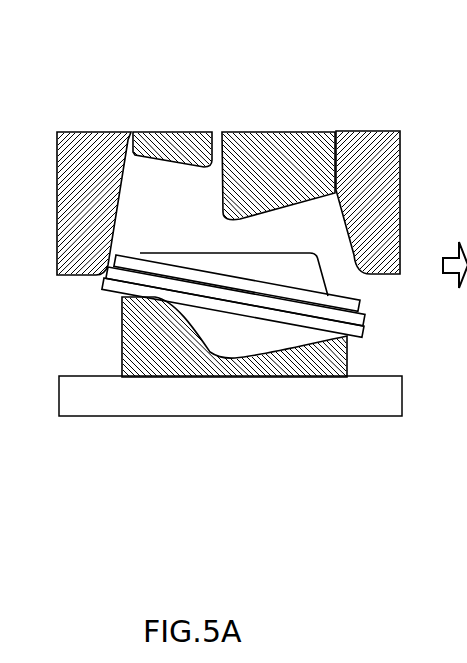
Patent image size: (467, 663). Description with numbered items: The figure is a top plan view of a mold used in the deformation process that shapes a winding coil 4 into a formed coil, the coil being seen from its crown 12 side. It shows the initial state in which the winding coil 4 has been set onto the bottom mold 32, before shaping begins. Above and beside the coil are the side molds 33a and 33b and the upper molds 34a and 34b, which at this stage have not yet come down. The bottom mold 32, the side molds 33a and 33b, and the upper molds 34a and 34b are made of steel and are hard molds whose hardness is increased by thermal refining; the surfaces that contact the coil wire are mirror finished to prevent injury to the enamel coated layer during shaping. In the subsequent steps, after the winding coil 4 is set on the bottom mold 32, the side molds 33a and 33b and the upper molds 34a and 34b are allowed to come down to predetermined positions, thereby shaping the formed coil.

The side mold 33a is at (93, 131).
The upper mold 34a is at (160, 131).
The upper mold 34b is at (277, 131).
The side mold 33b is at (372, 130).
The crown 12 is at (237, 300).
The bottom mold 32 is at (160, 350).
The winding coil 4 is at (353, 337).